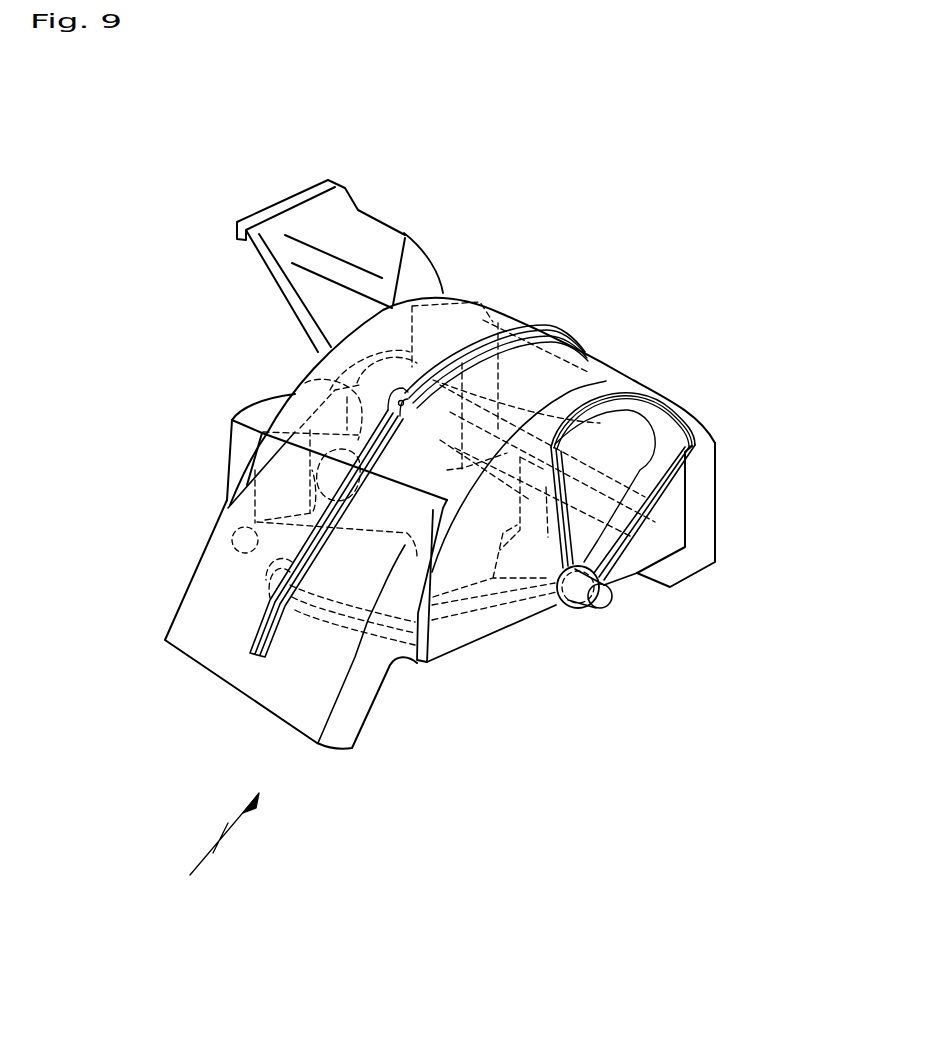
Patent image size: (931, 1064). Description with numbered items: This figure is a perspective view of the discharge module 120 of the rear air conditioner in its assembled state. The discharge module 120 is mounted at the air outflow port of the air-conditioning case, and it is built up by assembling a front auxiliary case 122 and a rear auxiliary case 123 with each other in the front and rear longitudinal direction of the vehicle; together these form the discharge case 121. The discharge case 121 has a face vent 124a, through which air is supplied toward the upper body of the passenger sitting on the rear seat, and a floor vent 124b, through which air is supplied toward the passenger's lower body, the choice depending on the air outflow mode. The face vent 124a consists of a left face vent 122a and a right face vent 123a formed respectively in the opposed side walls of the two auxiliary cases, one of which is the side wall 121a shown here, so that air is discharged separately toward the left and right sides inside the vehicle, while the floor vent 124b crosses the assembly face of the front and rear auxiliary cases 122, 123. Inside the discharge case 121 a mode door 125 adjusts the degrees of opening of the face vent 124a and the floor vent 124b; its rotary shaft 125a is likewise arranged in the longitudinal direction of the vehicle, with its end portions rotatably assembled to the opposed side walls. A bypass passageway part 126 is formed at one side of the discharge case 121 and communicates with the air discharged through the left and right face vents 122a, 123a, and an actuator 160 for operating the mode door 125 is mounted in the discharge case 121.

The discharge module 120 is at (218, 852).
The discharge case 121 is at (548, 227).
The side wall 121a is at (447, 663).
The front auxiliary case 122 is at (608, 368).
The left face vent 122a is at (622, 449).
The rear auxiliary case 123 is at (510, 325).
The right face vent 123a is at (415, 352).
The face vent 124a is at (419, 160).
The floor vent 124b is at (213, 672).
The mode door 125 is at (337, 620).
The rotary shaft 125a is at (601, 603).
The bypass passageway part 126 is at (680, 502).
The actuator 160 is at (240, 445).